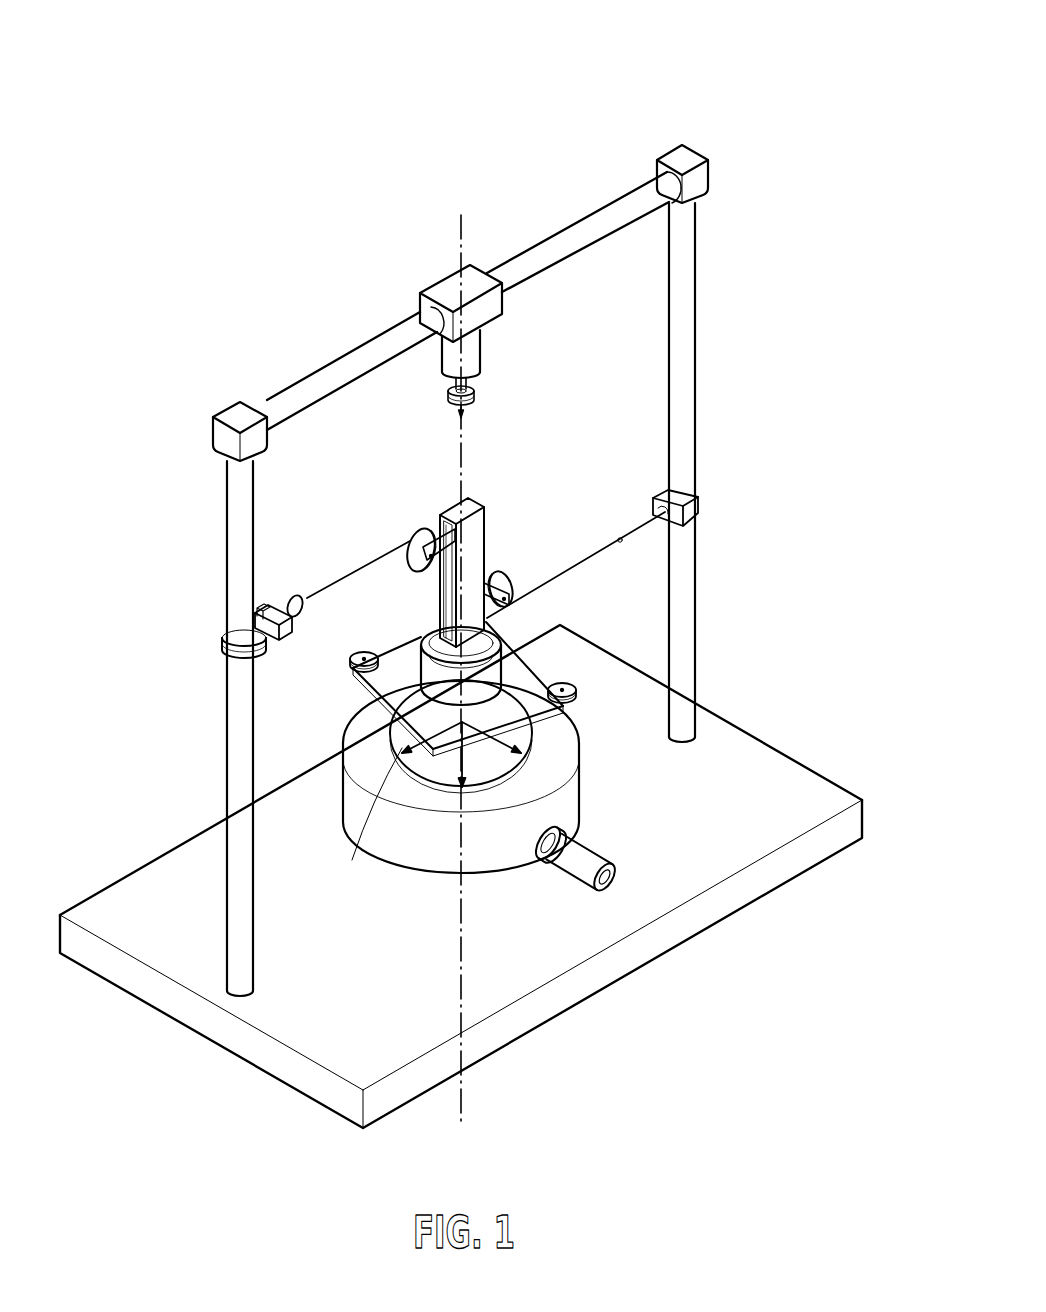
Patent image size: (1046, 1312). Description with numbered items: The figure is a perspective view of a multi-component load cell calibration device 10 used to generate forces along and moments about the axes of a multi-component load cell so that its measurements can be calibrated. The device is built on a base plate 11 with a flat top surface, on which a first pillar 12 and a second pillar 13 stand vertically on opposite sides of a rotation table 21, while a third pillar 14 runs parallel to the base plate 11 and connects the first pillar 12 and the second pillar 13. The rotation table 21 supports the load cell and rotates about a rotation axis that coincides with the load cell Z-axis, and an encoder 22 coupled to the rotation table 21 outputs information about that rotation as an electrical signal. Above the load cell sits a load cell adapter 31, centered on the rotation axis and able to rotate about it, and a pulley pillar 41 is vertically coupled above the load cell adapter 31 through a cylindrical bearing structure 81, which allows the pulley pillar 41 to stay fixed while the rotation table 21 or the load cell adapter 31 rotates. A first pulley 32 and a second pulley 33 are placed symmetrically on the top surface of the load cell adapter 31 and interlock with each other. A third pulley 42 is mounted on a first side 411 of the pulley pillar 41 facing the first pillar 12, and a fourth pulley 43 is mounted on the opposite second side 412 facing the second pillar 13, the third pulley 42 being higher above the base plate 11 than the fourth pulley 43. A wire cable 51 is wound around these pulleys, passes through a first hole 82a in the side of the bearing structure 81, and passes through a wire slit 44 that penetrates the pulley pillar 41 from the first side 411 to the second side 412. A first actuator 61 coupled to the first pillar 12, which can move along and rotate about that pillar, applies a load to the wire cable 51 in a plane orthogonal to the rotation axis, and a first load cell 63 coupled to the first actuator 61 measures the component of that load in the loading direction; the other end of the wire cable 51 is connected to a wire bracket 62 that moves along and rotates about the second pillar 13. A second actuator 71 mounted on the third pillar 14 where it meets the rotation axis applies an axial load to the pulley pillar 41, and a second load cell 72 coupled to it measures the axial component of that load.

The multi-component load cell calibration device 10 is at (461, 580).
The base plate 11 is at (644, 956).
The first pillar 12 is at (228, 704).
The second pillar 13 is at (696, 438).
The third pillar 14 is at (578, 232).
The rotation table 21 is at (487, 797).
The encoder 22 is at (619, 883).
The load cell adapter 31 is at (478, 728).
The first pulley 32 is at (578, 699).
The second pulley 33 is at (355, 670).
The pulley pillar 41 is at (475, 572).
The first side 411 is at (441, 587).
The second side 412 is at (486, 520).
The third pulley 42 is at (423, 533).
The fourth pulley 43 is at (510, 604).
The wire slit 44 is at (447, 613).
The wire cable 51 is at (366, 565).
The first actuator 61 is at (279, 633).
The wire bracket 62 is at (701, 512).
The first load cell 63 is at (292, 597).
The second actuator 71 is at (480, 350).
The second load cell 72 is at (476, 397).
The bearing structure 81 is at (445, 693).
The first hole 82a is at (568, 708).